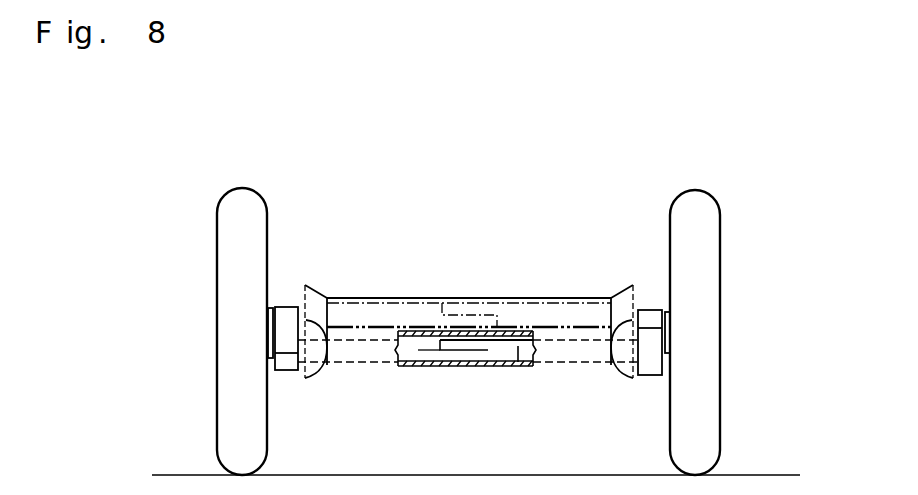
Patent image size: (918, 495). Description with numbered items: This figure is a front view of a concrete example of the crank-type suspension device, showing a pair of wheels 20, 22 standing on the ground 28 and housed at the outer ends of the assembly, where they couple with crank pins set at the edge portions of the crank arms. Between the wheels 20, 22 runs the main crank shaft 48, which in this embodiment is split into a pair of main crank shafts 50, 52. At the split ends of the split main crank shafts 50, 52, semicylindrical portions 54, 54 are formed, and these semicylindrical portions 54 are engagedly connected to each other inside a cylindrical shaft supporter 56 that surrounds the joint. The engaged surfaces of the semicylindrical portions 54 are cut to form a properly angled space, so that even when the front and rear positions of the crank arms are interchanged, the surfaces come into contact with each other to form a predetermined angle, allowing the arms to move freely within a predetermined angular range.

The wheel 20 is at (232, 221).
The wheel 22 is at (702, 216).
The ground surface 28 is at (758, 475).
The main crank shaft 48 is at (540, 327).
The split main crank shaft 50 is at (420, 352).
The split main crank shaft 52 is at (518, 352).
The semicylindrical portion 54 is at (488, 347).
The cylindrical shaft supporter 56 is at (426, 318).